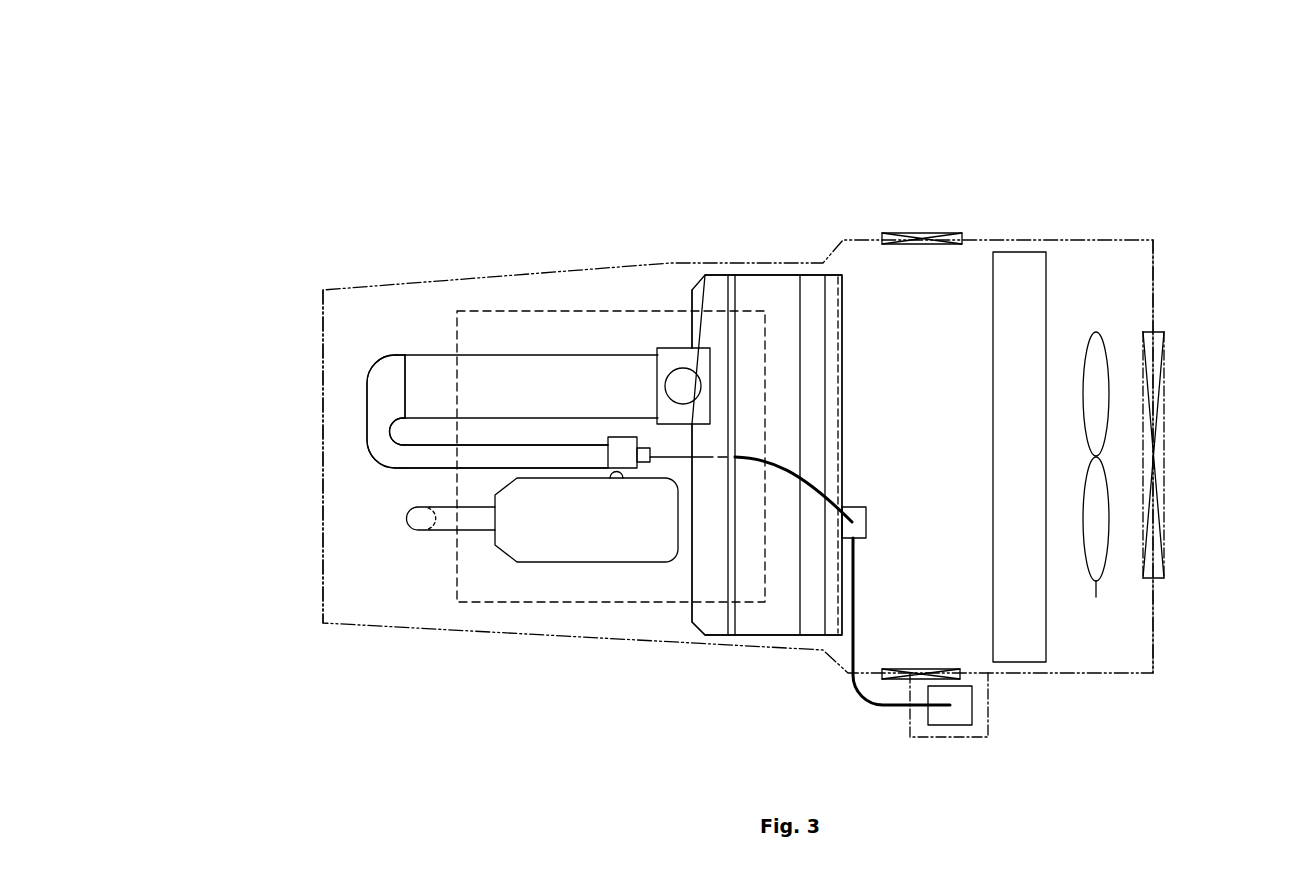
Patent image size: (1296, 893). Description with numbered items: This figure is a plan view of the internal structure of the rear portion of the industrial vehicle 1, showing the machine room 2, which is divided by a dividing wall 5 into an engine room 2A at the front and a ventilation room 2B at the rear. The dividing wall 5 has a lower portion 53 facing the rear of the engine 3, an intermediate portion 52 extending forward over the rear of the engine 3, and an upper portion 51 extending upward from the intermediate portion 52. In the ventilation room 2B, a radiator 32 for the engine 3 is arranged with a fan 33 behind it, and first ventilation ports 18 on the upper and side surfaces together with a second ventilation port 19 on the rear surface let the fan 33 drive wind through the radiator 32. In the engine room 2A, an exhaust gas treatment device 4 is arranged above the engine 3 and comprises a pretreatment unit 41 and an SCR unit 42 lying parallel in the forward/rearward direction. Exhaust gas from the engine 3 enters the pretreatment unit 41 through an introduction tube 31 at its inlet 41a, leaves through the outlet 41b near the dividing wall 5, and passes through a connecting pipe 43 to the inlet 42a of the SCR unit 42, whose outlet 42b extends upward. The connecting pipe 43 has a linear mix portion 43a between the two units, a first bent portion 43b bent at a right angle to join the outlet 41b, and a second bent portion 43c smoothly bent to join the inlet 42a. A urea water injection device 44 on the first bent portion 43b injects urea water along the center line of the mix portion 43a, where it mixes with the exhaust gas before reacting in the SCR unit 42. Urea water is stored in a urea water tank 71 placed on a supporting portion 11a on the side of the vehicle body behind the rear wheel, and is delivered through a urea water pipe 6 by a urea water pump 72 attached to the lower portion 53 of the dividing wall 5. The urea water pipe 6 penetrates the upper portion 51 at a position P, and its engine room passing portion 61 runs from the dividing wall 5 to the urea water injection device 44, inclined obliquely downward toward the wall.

The industrial vehicle 1 is at (1247, 170).
The machine room 2 is at (475, 277).
The engine room 2A is at (357, 327).
The ventilation room 2B is at (1100, 278).
The engine 3 is at (678, 598).
The exhaust gas treatment device 4 is at (505, 338).
The dividing wall 5 is at (763, 275).
The urea water pipe 6 is at (855, 605).
The supporting portion 11a is at (988, 697).
The first ventilation port 18 is at (910, 232).
The second ventilation port 19 is at (1168, 475).
The introduction tube 31 is at (445, 528).
The radiator 32 is at (1020, 270).
The fan 33 is at (1096, 580).
The pretreatment unit 41 is at (540, 543).
The inlet 41a is at (490, 520).
The outlet 41b is at (597, 483).
The SCR unit 42 is at (548, 375).
The inlet 42a is at (407, 385).
The outlet 42b is at (682, 370).
The connecting pipe 43 is at (367, 432).
The mix portion 43a is at (425, 455).
The first bent portion 43b is at (622, 455).
The second bent portion 43c is at (383, 408).
The urea water injection device 44 is at (644, 462).
The upper portion 51 is at (717, 300).
The intermediate portion 52 is at (780, 618).
The lower portion 53 is at (845, 300).
The engine room passing portion 61 is at (678, 457).
The urea water tank 71 is at (962, 710).
The urea water pump 72 is at (857, 508).
The position where the urea water pipe penetrates the upper portion of the dividing P is at (710, 453).